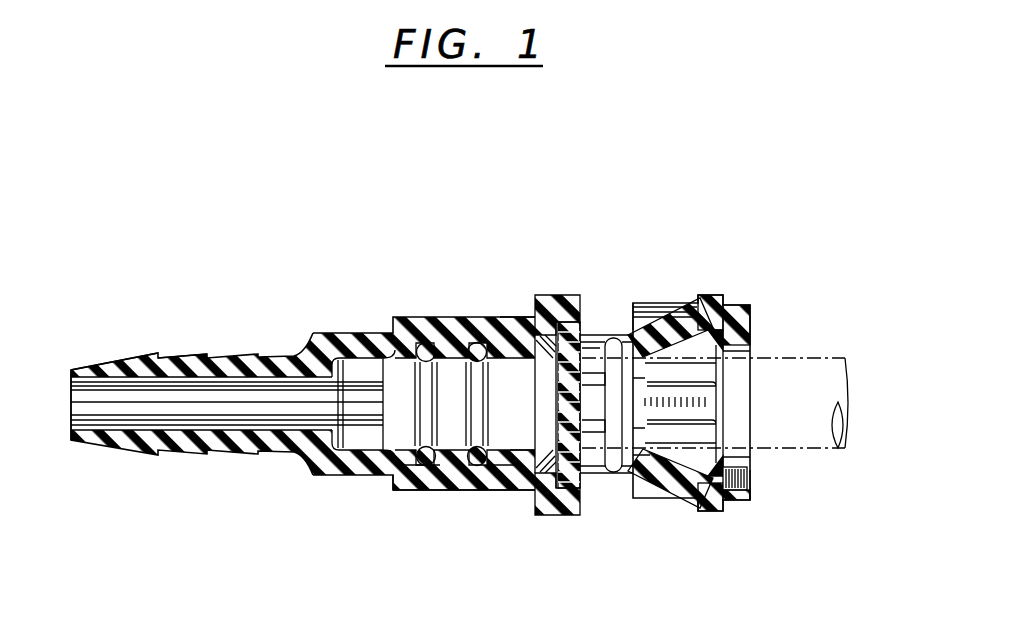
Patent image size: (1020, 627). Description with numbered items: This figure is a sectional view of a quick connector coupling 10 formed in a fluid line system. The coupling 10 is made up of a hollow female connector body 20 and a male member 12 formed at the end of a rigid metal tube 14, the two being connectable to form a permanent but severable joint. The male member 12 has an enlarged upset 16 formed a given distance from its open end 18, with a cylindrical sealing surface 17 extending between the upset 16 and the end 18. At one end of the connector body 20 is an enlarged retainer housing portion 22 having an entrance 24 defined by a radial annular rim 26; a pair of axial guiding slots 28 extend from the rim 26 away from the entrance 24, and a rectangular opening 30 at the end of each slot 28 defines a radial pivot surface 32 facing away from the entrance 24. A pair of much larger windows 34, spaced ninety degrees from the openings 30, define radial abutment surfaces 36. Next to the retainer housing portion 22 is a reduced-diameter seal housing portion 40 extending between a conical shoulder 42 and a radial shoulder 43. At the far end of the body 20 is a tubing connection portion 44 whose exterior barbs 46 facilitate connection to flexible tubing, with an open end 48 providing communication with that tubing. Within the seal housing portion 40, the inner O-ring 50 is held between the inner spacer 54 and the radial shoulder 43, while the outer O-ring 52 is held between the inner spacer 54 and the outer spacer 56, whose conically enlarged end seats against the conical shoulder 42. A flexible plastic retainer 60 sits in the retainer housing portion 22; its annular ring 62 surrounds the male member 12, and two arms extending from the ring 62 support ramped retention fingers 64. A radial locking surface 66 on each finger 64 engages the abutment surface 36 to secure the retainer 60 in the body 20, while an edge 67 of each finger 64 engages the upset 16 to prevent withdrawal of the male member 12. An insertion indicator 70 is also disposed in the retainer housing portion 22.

The quick connector coupling 10 is at (601, 194).
The male member 12 is at (378, 478).
The tube 14 is at (843, 423).
The upset 16 is at (609, 388).
The cylindrical sealing surface 17 is at (523, 490).
The open end 18 is at (332, 412).
The female connector body 20 is at (315, 325).
The retainer housing portion 22 is at (563, 505).
The entrance 24 is at (733, 496).
The radial annular rim 26 is at (716, 505).
The axial guiding slots 28 is at (651, 345).
The rectangular opening 30 is at (598, 337).
The radial pivot surface 32 is at (608, 478).
The windows 34 is at (618, 493).
The radial abutment surface 36 is at (696, 302).
The seal housing portion 40 is at (452, 488).
The conical shoulder 42 is at (520, 317).
The radial shoulder 43 is at (425, 343).
The tubing connection portion 44 is at (122, 367).
The barbs 46 is at (203, 355).
The open end 48 is at (67, 412).
The inner O-ring seal 50 is at (393, 488).
The outer O-ring seal 52 is at (488, 343).
The inner spacer 54 is at (418, 488).
The outer spacer 56 is at (488, 490).
The retainer 60 is at (785, 358).
The annular ring 62 is at (567, 294).
The ramped retention fingers 64 is at (679, 313).
The radial locking surface 66 is at (712, 492).
The edge 67 is at (645, 493).
The insertion indicator 70 is at (768, 489).